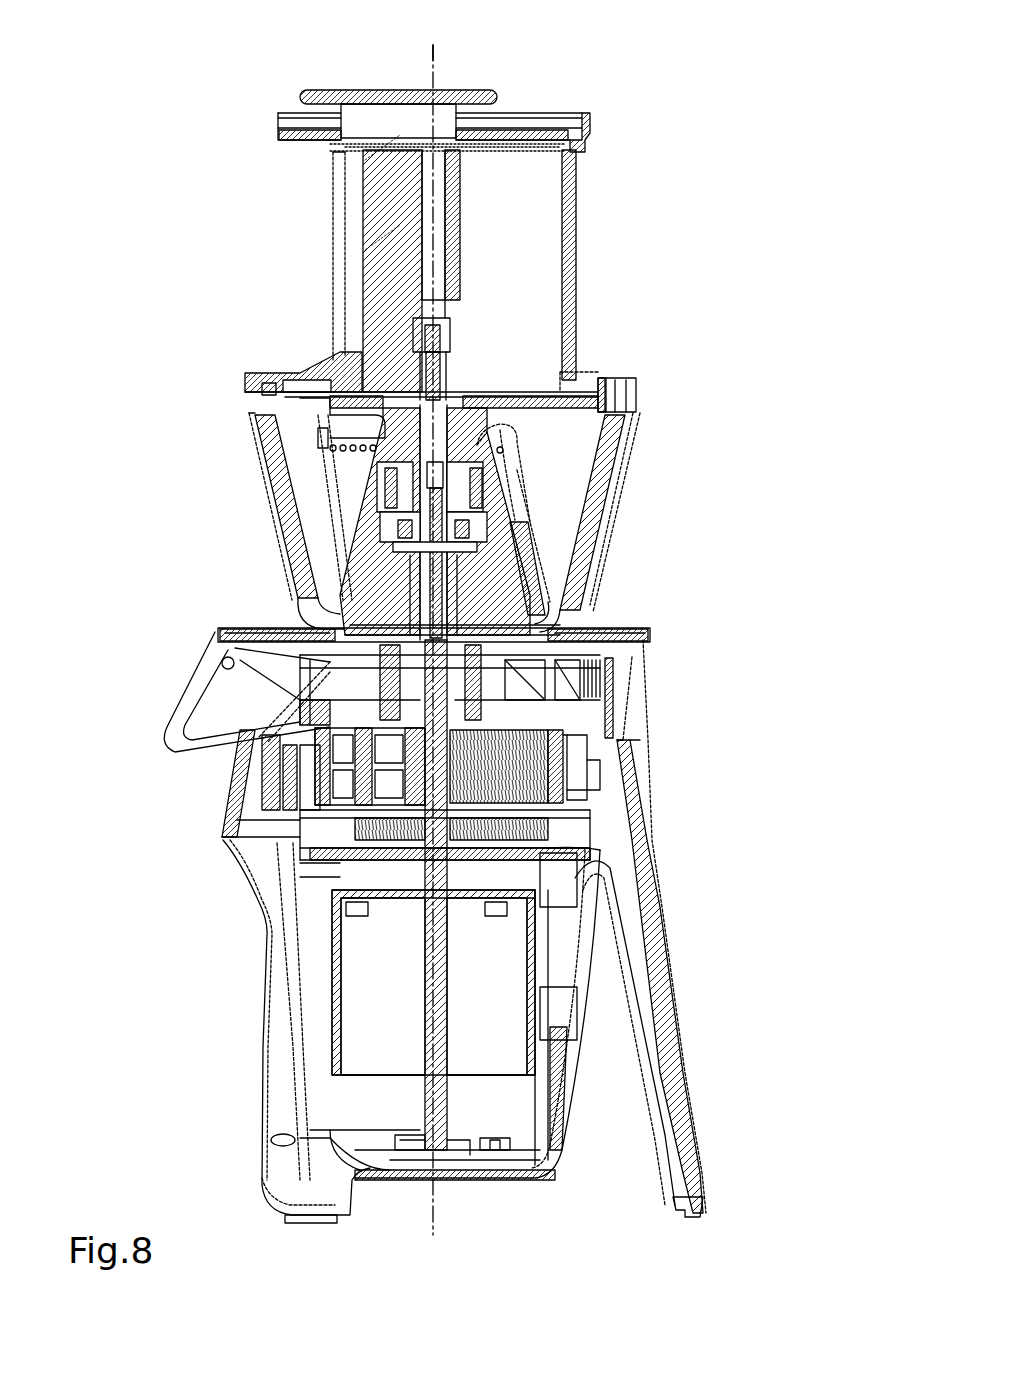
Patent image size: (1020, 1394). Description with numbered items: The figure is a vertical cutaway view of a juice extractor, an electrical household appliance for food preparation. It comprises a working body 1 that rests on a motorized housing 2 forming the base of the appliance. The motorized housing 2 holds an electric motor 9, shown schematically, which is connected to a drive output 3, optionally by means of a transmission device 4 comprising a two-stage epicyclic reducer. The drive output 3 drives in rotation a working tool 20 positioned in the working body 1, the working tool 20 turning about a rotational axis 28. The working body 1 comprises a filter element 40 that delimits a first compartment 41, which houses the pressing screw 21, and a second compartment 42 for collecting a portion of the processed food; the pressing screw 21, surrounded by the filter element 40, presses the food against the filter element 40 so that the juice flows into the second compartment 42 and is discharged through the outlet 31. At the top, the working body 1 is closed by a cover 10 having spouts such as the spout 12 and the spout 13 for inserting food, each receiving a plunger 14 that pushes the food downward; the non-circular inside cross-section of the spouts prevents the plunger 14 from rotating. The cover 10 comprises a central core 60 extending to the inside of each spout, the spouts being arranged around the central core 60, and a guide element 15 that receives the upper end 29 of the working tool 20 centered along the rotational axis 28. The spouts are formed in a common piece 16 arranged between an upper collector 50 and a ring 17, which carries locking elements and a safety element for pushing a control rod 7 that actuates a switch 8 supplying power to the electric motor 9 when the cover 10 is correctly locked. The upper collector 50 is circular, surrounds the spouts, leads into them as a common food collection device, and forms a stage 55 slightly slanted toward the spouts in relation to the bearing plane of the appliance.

The working body 1 is at (620, 562).
The motorized housing 2 is at (650, 867).
The drive output 3 is at (437, 507).
The transmission device 4 is at (545, 763).
The control rod 7 is at (582, 587).
The switch 8 is at (572, 680).
The electric motor 9 is at (508, 988).
The cover 10 is at (638, 393).
The spout 12 is at (548, 222).
The spout 13 is at (342, 242).
The plunger 14 is at (470, 95).
The guide element 15 is at (452, 335).
The common piece 16 is at (575, 273).
The ring 17 is at (252, 378).
The working tool 20 is at (529, 503).
The pressing screw 21 is at (525, 518).
The rotational axis 28 is at (433, 52).
The upper end 29 is at (438, 367).
The outlet 31 is at (175, 727).
The filter element 40 is at (310, 495).
The first compartment 41 is at (335, 472).
The second compartment 42 is at (303, 530).
The upper collector 50 is at (588, 123).
The stage 55 is at (307, 135).
The central core 60 is at (455, 207).